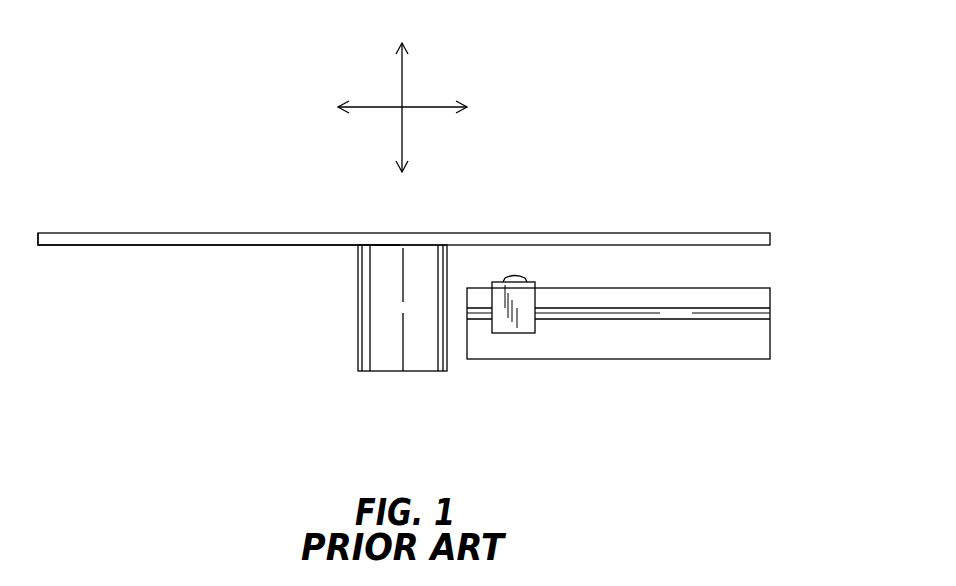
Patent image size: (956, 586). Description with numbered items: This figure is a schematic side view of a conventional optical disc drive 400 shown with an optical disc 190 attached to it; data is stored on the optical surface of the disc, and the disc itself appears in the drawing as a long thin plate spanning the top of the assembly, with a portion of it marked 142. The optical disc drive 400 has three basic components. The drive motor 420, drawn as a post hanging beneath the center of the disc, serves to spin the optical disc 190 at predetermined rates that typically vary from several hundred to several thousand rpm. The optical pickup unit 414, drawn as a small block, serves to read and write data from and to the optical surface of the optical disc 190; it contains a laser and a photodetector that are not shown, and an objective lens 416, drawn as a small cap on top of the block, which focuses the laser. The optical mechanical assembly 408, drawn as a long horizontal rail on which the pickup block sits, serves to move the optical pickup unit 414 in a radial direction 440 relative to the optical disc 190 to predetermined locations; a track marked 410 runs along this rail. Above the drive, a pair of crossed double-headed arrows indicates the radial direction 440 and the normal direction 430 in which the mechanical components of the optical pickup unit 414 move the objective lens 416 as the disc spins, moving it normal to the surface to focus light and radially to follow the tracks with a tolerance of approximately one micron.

The optical disc drive 400 is at (685, 107).
The normal direction 430 is at (392, 73).
The radial direction 440 is at (435, 98).
The optical disc 190 is at (720, 232).
The plate surface 142 is at (167, 248).
The drive motor 420 is at (382, 382).
The optical mechanical assembly 408 is at (645, 373).
The rail track 410 is at (770, 313).
The optical pickup unit 414 is at (514, 335).
The objective lens 416 is at (515, 277).